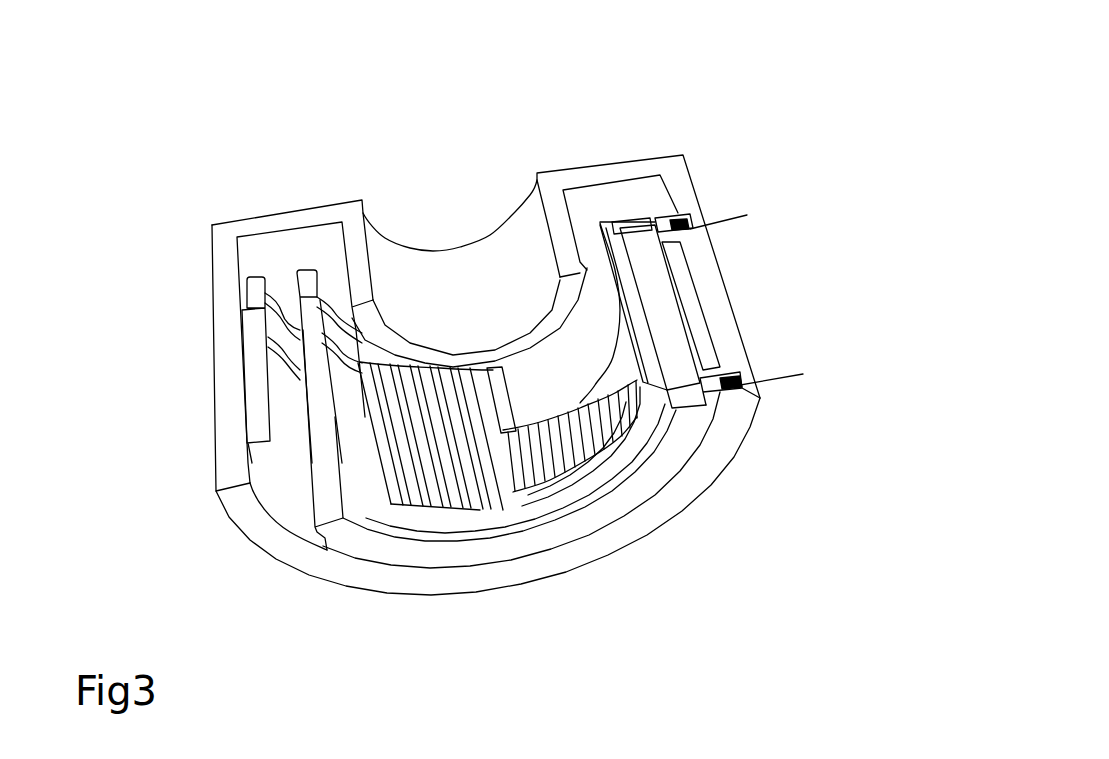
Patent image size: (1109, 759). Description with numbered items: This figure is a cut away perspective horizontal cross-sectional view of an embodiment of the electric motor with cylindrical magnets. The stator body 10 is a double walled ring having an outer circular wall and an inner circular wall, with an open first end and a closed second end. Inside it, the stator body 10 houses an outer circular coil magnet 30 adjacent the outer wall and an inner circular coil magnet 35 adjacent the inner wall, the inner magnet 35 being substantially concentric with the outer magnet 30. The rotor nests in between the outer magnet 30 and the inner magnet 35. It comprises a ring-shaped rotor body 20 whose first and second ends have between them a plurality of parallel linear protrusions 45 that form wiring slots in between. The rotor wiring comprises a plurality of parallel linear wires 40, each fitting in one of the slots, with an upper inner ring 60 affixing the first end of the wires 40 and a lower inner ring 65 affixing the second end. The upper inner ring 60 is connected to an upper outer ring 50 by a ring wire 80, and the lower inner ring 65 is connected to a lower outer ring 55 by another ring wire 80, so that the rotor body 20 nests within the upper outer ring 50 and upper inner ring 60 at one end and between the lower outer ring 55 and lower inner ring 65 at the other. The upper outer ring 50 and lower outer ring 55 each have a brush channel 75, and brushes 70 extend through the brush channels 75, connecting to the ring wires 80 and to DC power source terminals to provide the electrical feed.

The stator body 10 is at (227, 230).
The rotor body 20 is at (662, 328).
The outer circular coil magnet 30 is at (703, 333).
The inner circular coil magnet 35 is at (608, 327).
The parallel linear wires 40 is at (377, 493).
The parallel linear protrusions 45 is at (447, 503).
The upper outer ring 50 is at (712, 390).
The lower outer ring 55 is at (662, 222).
The upper inner ring 60 is at (657, 405).
The lower inner ring 65 is at (617, 218).
The brushes 70 is at (712, 217).
The brush channel 75 is at (690, 222).
The ring wire 80 is at (683, 390).